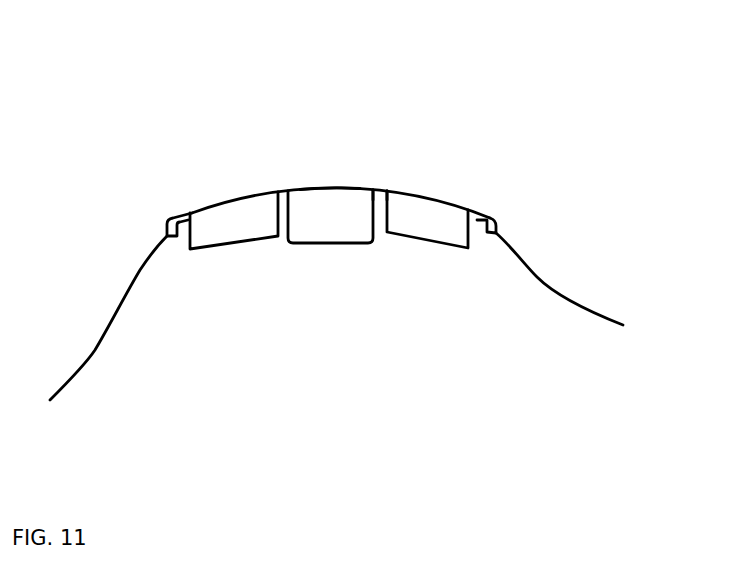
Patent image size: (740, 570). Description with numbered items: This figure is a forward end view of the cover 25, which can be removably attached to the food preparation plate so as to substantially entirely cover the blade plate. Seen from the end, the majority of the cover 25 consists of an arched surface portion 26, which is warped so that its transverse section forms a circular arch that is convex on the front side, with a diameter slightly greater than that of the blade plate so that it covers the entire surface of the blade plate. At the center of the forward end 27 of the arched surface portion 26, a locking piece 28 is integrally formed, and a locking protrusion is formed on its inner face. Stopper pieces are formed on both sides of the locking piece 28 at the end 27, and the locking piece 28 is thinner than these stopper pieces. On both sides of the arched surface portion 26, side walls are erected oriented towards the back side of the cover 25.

The cover 25 is at (290, 165).
The arched surface portion 26 is at (350, 192).
The forward and rear ends of the arched surface portion 27 is at (385, 192).
The locking piece 28 is at (328, 230).